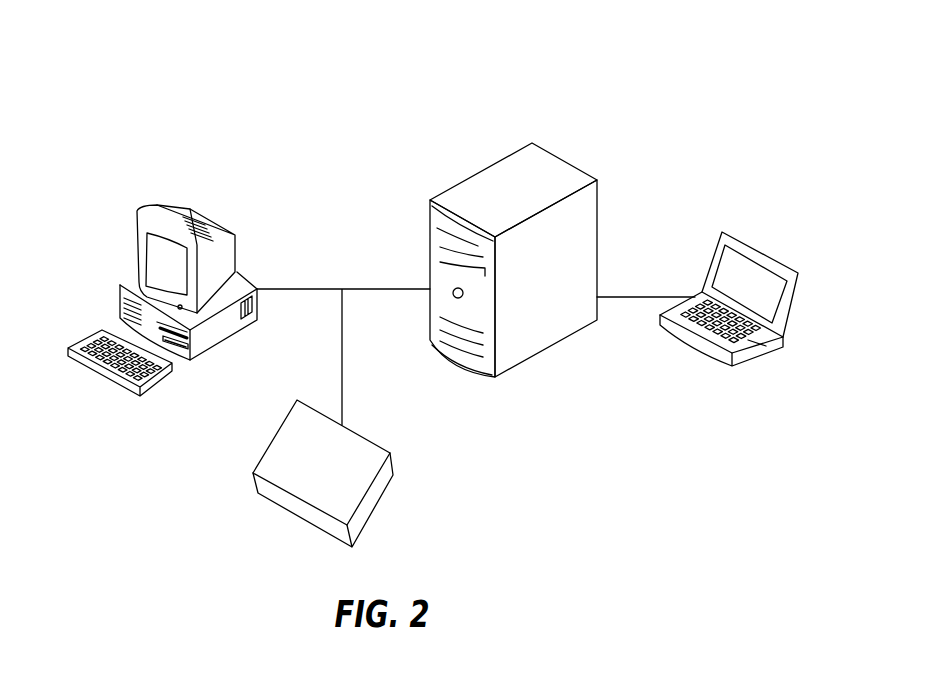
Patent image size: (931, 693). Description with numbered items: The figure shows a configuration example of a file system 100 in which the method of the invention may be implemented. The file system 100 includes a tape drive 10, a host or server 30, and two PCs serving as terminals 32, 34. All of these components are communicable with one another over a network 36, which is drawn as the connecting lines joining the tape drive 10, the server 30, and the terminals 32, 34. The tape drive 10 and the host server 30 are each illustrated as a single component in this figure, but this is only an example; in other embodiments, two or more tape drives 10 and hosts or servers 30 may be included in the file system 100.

The file system 100 is at (400, 99).
The tape drive 10 is at (306, 473).
The host (server) 30 is at (563, 158).
The PC (terminal) 32 is at (212, 221).
The PC (terminal) 34 is at (757, 250).
The network 36 is at (344, 364).